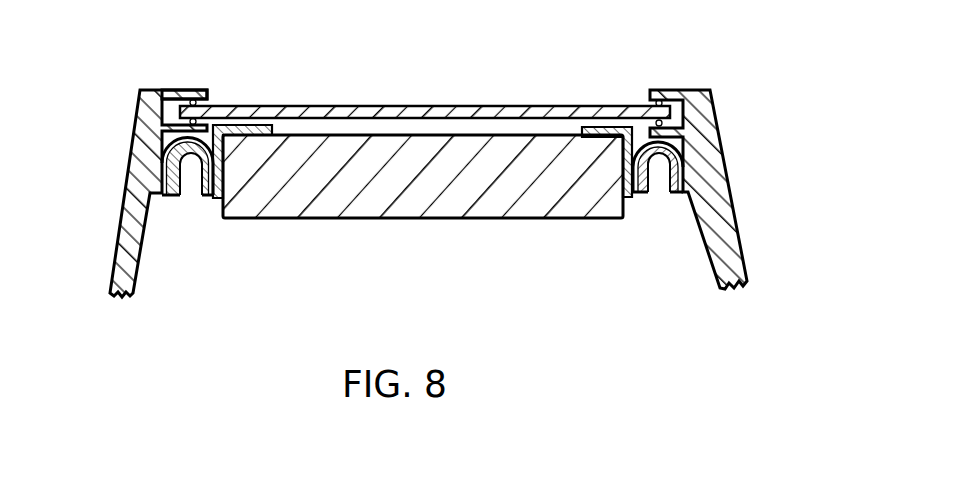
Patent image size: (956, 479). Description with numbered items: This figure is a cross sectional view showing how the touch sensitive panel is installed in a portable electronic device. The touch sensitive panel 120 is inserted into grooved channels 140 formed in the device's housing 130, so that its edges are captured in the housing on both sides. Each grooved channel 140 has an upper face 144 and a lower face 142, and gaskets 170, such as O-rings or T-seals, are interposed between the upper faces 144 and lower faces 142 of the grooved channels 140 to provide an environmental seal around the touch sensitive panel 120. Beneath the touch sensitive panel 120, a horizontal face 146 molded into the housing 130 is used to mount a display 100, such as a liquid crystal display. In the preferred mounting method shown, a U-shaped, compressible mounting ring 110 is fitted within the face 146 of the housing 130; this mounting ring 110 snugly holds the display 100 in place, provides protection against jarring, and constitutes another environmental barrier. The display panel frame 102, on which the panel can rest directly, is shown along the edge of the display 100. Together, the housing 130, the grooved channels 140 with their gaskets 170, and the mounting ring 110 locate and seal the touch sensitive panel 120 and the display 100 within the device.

The display 100 is at (358, 207).
The display panel frame 102 is at (212, 202).
The U-shaped compressible mounting ring 110 is at (641, 197).
The touch sensitive panel 120 is at (438, 107).
The housing 130 is at (710, 135).
The grooved channels 140 is at (180, 105).
The lower faces 142 is at (180, 98).
The upper faces 144 is at (166, 140).
The horizontal face 146 is at (167, 165).
The gaskets 170 is at (197, 107).